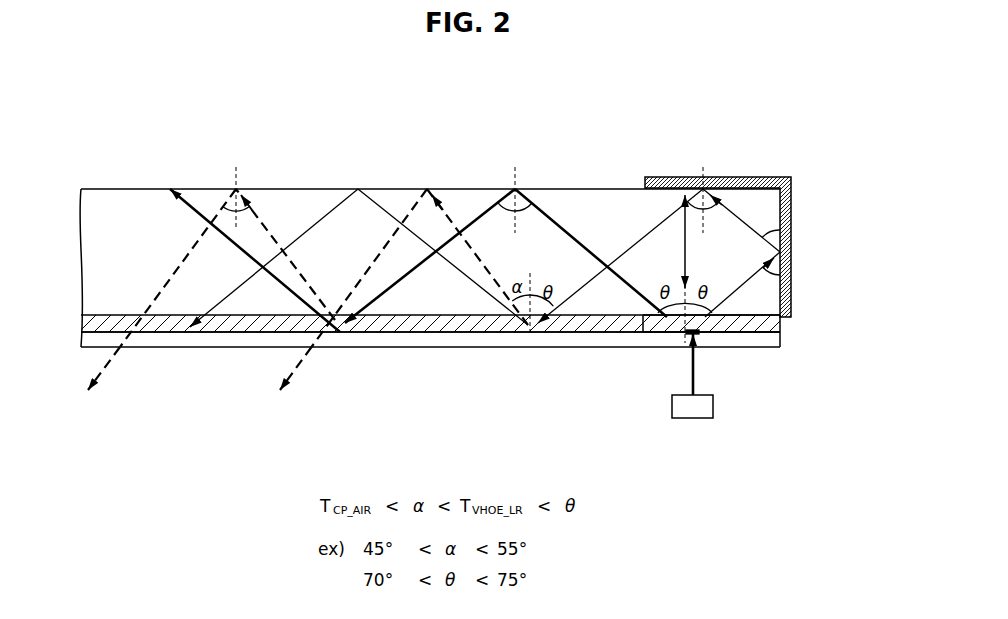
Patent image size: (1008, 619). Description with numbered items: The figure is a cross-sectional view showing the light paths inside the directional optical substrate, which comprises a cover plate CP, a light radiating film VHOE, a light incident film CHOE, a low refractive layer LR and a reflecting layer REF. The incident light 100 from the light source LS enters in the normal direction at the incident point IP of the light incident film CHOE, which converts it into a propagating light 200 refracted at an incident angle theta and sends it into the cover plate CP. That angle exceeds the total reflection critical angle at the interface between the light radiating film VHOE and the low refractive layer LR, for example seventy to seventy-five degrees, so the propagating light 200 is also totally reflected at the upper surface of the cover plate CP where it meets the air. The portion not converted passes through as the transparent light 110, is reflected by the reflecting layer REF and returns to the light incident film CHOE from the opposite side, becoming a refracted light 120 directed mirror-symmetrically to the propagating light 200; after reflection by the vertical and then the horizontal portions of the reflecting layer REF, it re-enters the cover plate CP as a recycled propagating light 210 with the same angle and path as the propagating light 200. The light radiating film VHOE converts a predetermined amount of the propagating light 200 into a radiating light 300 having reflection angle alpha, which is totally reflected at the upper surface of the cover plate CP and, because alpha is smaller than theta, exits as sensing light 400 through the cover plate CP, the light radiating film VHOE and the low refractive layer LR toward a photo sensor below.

The cover plate CP is at (130, 203).
The propagating light 200 is at (201, 215).
The radiating light 300 is at (268, 232).
The recycled propagating light 210 is at (327, 214).
The transparent light 110 is at (683, 232).
The refracted light 120 is at (745, 223).
The sensing light 400 is at (110, 367).
The incident light 100 is at (695, 370).
The light source LS is at (713, 408).
The reflecting layer REF is at (792, 205).
The incident point IP is at (700, 338).
The low refractive layer LR is at (393, 335).
The light radiating film VHOE is at (470, 330).
The light incident film CHOE is at (653, 333).